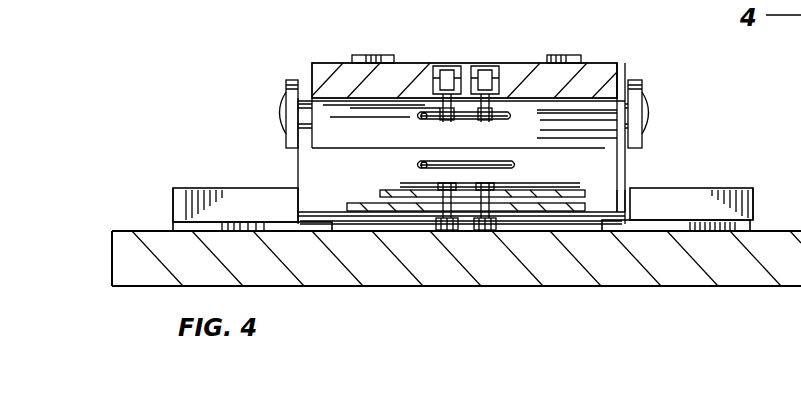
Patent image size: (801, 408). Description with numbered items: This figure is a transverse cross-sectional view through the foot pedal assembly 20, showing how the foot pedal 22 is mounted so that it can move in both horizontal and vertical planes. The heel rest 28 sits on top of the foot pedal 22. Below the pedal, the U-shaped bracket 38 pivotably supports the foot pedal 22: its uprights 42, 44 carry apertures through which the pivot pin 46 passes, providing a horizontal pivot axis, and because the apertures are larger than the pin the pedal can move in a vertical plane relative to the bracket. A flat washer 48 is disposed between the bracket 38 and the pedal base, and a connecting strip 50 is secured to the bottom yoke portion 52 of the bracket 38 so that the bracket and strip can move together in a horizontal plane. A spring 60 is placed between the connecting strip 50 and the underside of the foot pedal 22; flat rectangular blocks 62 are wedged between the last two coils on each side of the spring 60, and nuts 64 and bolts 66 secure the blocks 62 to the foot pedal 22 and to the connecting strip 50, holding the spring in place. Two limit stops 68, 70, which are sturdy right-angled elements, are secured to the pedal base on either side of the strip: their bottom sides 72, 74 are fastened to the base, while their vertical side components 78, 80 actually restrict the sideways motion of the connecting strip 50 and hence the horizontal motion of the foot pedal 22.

The support assembly 20 is at (736, 158).
The foot pedal 22 is at (619, 68).
The heel rest 28 is at (580, 61).
The U-shaped bracket 38 is at (653, 153).
The upright 42 is at (643, 173).
The upright 44 is at (288, 152).
The pivot pin 46 is at (278, 108).
The flat washer 48 is at (479, 231).
The connecting strip 50 is at (584, 206).
The bottom yoke portion 52 is at (340, 212).
The spring 60 is at (417, 162).
The flat rectangular blocks 62 is at (555, 106).
The nuts 64 is at (420, 122).
The bolts 66 is at (432, 92).
The limit stop 68 is at (163, 210).
The limit stop 70 is at (765, 222).
The bottom side 72 is at (270, 232).
The bottom side 74 is at (693, 233).
The vertical side component 78 is at (232, 178).
The vertical side component 80 is at (704, 219).